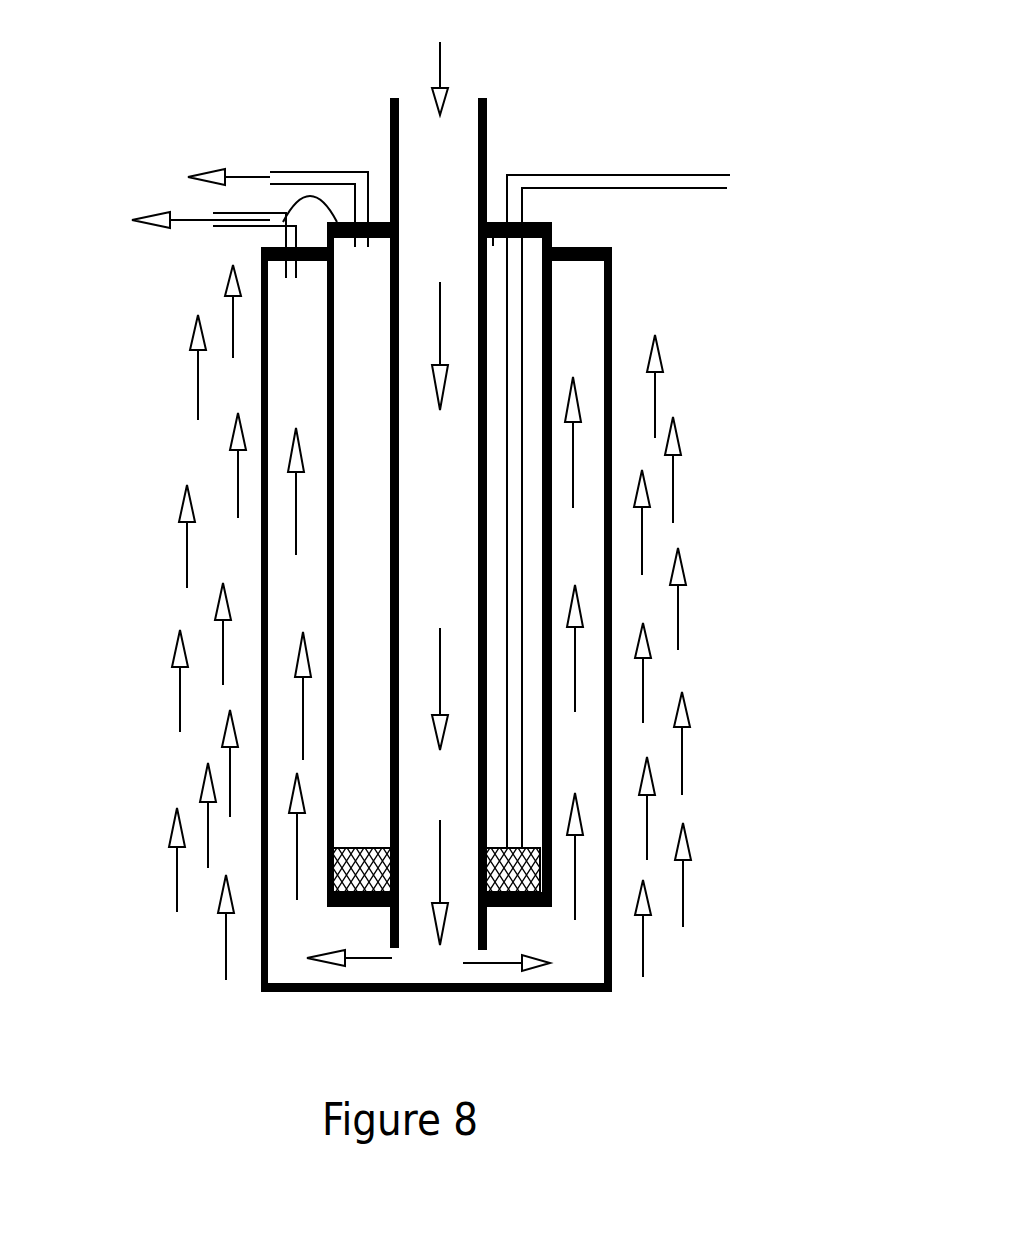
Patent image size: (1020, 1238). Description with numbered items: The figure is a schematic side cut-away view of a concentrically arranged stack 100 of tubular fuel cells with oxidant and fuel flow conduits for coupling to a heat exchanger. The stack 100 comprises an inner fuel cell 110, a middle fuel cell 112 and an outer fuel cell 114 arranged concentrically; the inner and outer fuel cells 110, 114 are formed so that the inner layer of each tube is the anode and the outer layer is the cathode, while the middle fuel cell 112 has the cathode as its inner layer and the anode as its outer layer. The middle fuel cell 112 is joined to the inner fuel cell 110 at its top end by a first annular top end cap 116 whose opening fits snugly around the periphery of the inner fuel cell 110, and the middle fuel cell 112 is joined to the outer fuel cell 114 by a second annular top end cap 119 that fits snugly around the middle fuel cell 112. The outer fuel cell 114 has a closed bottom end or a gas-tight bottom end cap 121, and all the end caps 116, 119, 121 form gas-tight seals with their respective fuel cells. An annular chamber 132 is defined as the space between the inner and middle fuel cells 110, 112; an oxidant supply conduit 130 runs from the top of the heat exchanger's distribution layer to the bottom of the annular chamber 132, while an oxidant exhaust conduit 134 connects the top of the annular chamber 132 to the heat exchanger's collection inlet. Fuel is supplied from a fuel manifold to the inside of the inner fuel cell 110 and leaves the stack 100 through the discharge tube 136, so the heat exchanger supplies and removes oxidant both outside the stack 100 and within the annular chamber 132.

The concentrically arranged stack 100 is at (160, 662).
The inner fuel cell 110 is at (488, 120).
The middle fuel cell 112 is at (550, 779).
The outer fuel cell 114 is at (615, 278).
The first annular top end cap 116 is at (532, 238).
The second annular top end cap 119 is at (593, 243).
The bottom end cap 121 is at (562, 993).
The oxidant supply conduit 130 is at (590, 173).
The annular chamber 132 is at (327, 880).
The oxidant exhaust conduit 134 is at (332, 172).
The discharge tube 136 is at (283, 222).